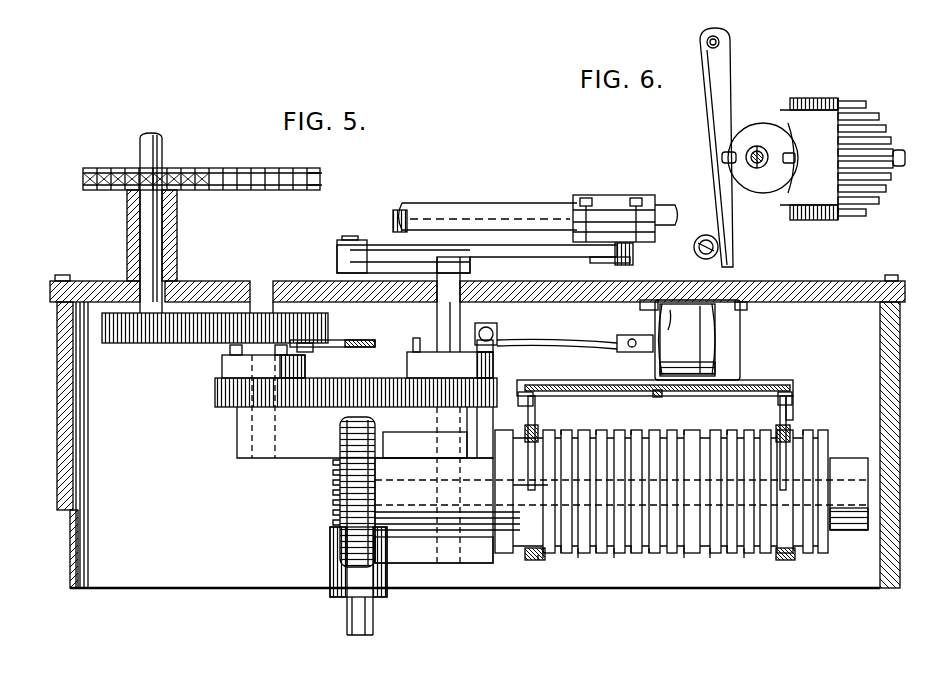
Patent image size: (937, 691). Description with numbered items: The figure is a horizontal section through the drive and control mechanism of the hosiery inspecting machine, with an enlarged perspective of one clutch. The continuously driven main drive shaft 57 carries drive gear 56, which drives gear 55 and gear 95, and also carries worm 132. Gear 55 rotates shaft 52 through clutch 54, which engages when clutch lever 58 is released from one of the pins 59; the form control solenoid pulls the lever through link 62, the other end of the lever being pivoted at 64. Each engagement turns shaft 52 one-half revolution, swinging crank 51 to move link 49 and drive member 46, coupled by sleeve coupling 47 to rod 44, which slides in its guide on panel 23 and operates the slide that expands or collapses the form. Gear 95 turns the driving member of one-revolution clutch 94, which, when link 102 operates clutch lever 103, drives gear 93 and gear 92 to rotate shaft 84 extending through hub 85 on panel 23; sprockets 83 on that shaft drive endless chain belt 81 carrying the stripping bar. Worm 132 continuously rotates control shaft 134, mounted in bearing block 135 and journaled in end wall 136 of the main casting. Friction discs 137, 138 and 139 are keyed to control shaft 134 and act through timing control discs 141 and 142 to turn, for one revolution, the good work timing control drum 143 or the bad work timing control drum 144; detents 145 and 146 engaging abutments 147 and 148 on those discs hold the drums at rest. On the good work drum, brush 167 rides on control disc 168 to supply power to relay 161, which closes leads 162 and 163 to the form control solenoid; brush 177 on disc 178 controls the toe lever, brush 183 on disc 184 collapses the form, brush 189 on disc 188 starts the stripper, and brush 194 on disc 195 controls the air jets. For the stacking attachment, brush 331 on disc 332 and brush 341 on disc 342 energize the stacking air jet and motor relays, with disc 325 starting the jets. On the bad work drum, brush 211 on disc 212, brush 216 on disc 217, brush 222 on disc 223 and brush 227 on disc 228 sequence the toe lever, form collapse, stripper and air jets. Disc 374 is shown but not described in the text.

In FIG. 5, the panel 23 is at (551, 283).
In FIG. 5, the end wall 136 is at (880, 362).
In FIG. 5, the shaft 84 is at (162, 140).
In FIG. 5, the hub 85 is at (177, 226).
In FIG. 5, the sprockets 83 is at (205, 168).
In FIG. 5, the endless chain belt 81 is at (312, 190).
In FIG. 5, the gear 92 is at (127, 343).
In FIG. 5, the gear 93 is at (205, 343).
In FIG. 5, the one-revolution clutch 94 is at (305, 368).
In FIG. 5, the link 102 is at (345, 341).
In FIG. 5, the clutch lever 103 is at (313, 345).
In FIG. 5, the gear 95 is at (215, 390).
In FIG. 5, the gear 55 is at (427, 403).
In FIG. 6, the gear 55 is at (852, 100).
In FIG. 5, the drive gear 56 is at (392, 380).
In FIG. 5, the clutch 54 is at (493, 376).
In FIG. 6, the clutch 54 is at (808, 105).
In FIG. 5, the pin 59 is at (455, 348).
In FIG. 6, the pin 59 is at (757, 145).
In FIG. 5, the shaft 52 is at (437, 307).
In FIG. 6, the shaft 52 is at (759, 171).
In FIG. 5, the clutch lever 58 is at (497, 345).
In FIG. 6, the clutch lever 58 is at (722, 73).
In FIG. 5, the link 62 is at (565, 340).
In FIG. 5, the relay 161 is at (666, 358).
In FIG. 5, the lead 162 is at (655, 320).
In FIG. 5, the lead 163 is at (676, 327).
In FIG. 5, the rod 44 is at (527, 205).
In FIG. 5, the drive member 46 is at (393, 220).
In FIG. 5, the sleeve coupling 47 is at (613, 195).
In FIG. 5, the crank 51 is at (337, 265).
In FIG. 5, the link 49 is at (375, 245).
In FIG. 5, the worm 132 is at (333, 495).
In FIG. 5, the friction disc 137 is at (330, 545).
In FIG. 5, the main drive shaft 57 is at (373, 608).
In FIG. 5, the control shaft 134 is at (412, 535).
In FIG. 5, the bearing block 135 is at (622, 468).
In FIG. 5, the timing control disc 141 is at (575, 505).
In FIG. 5, the detent 145 is at (548, 490).
In FIG. 5, the timing control disc 142 is at (812, 555).
In FIG. 5, the detent 146 is at (820, 455).
In FIG. 5, the disc 184 is at (533, 400).
In FIG. 5, the disc 178 is at (535, 430).
In FIG. 5, the disc 228 is at (766, 430).
In FIG. 5, the bad work timing control drum 144 is at (792, 398).
In FIG. 5, the abutment 147 is at (512, 555).
In FIG. 5, the abutment 148 is at (786, 560).
In FIG. 5, the contact brush 177 is at (538, 560).
In FIG. 5, the disc 325 is at (566, 430).
In FIG. 5, the disc 188 is at (566, 430).
In FIG. 5, the disc 332 is at (601, 430).
In FIG. 5, the disc 195 is at (601, 430).
In FIG. 5, the control disc 168 is at (636, 430).
In FIG. 5, the disc 342 is at (636, 430).
In FIG. 5, the disc 212 is at (692, 430).
In FIG. 5, the friction disc 138 is at (692, 430).
In FIG. 5, the disc 223 is at (732, 430).
In FIG. 5, the disc 217 is at (732, 430).
In FIG. 5, the friction disc 139 is at (808, 430).
In FIG. 5, the contact brush 183 is at (549, 555).
In FIG. 5, the brush 189 is at (558, 571).
In FIG. 5, the disc 374 is at (584, 555).
In FIG. 5, the contact brush 194 is at (590, 571).
In FIG. 5, the contact brush 331 is at (620, 555).
In FIG. 5, the contact brush 341 is at (628, 571).
In FIG. 5, the brush 167 is at (655, 555).
In FIG. 5, the good work timing control drum 143 is at (692, 555).
In FIG. 5, the brush 211 is at (716, 555).
In FIG. 5, the brush 216 is at (719, 570).
In FIG. 5, the brush 222 is at (749, 555).
In FIG. 5, the brush 227 is at (746, 571).
In FIG. 6, the pivot 64 is at (720, 247).